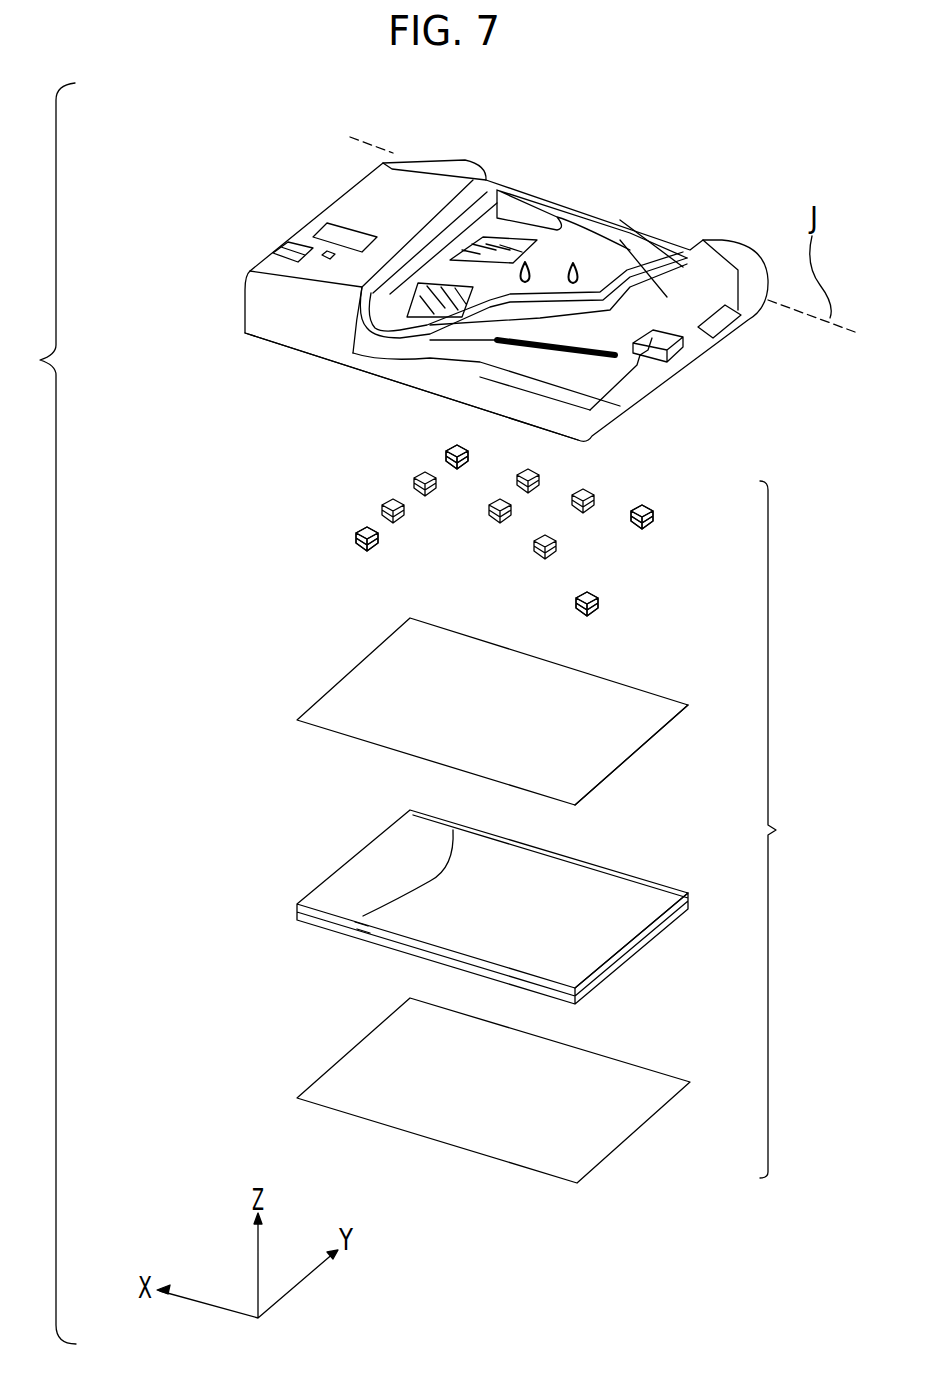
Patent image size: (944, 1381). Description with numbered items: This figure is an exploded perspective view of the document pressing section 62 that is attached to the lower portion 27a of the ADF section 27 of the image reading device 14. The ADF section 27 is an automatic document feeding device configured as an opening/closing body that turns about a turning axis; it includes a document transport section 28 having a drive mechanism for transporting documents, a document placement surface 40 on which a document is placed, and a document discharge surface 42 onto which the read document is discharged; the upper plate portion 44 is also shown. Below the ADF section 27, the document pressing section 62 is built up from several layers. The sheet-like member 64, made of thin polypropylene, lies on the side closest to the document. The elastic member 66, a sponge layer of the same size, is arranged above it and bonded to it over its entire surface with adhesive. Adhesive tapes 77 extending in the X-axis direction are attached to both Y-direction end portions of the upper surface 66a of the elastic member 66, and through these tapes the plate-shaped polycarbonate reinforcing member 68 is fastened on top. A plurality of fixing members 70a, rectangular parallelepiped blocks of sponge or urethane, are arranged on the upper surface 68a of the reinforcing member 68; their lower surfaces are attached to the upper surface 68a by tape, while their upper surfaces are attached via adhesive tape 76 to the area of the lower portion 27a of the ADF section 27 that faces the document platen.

The ADF section 27 is at (238, 260).
The image reading device 14 is at (441, 302).
The document transport section 28 is at (393, 197).
The top plate portion 44 is at (347, 208).
The document placement surface 40 is at (563, 258).
The document discharge surface 42 is at (735, 330).
The lower portion of the ADF section 27a is at (375, 372).
The fixing member 70a is at (575, 605).
The adhesive tape 76 is at (445, 458).
The reinforcing member 68 is at (570, 695).
The upper surface of the reinforcing member 68a is at (618, 745).
The elastic member 66 is at (486, 908).
The upper surface of the elastic member 66a is at (610, 942).
The adhesive tape 77 is at (360, 920).
The sheet-like member 64 is at (455, 1118).
The document pressing section 62 is at (782, 829).